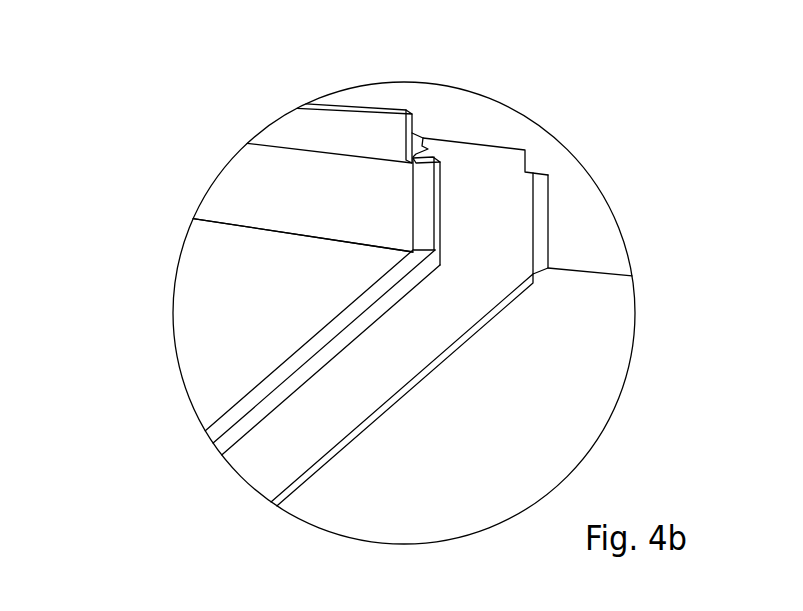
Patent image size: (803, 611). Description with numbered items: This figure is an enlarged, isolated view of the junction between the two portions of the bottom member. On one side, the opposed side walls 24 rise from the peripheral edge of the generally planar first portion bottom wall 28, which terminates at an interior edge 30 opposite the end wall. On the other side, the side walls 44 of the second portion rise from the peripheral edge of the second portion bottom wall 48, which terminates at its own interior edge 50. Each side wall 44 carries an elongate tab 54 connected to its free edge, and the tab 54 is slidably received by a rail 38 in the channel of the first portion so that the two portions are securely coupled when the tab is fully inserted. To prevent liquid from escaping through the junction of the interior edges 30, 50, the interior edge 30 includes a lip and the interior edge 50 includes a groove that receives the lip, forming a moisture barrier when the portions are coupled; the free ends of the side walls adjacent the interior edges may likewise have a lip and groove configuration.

The side walls 24 is at (253, 195).
The first portion bottom wall 28 is at (193, 290).
The interior edge 30 is at (317, 338).
The rail 38 is at (370, 130).
The side walls 44 is at (593, 205).
The bottom wall 48 is at (575, 417).
The interior edge 50 is at (337, 442).
The tab 54 is at (486, 112).